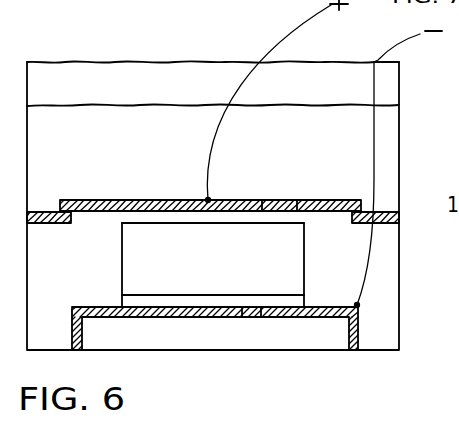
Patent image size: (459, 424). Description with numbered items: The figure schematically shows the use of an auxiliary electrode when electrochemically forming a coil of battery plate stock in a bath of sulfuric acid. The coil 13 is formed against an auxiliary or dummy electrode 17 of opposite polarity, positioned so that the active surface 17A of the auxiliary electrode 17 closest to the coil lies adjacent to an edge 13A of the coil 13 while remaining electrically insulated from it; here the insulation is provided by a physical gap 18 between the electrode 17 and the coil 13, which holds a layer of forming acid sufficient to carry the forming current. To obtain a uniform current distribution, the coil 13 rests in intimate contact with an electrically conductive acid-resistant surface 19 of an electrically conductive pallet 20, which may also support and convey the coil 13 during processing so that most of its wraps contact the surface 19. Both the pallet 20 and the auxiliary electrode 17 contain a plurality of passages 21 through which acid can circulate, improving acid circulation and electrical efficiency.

The coil 13 is at (122, 270).
The edge of coil 13A is at (139, 223).
The auxiliary electrode 17 is at (311, 200).
The active surface of auxiliary electrode 17A is at (100, 212).
The physical gap 18 is at (284, 218).
The electrically conductive acid-resistant surface 19 is at (299, 303).
The electrically conductive pallet 20 is at (358, 338).
The passages 21 is at (297, 200).